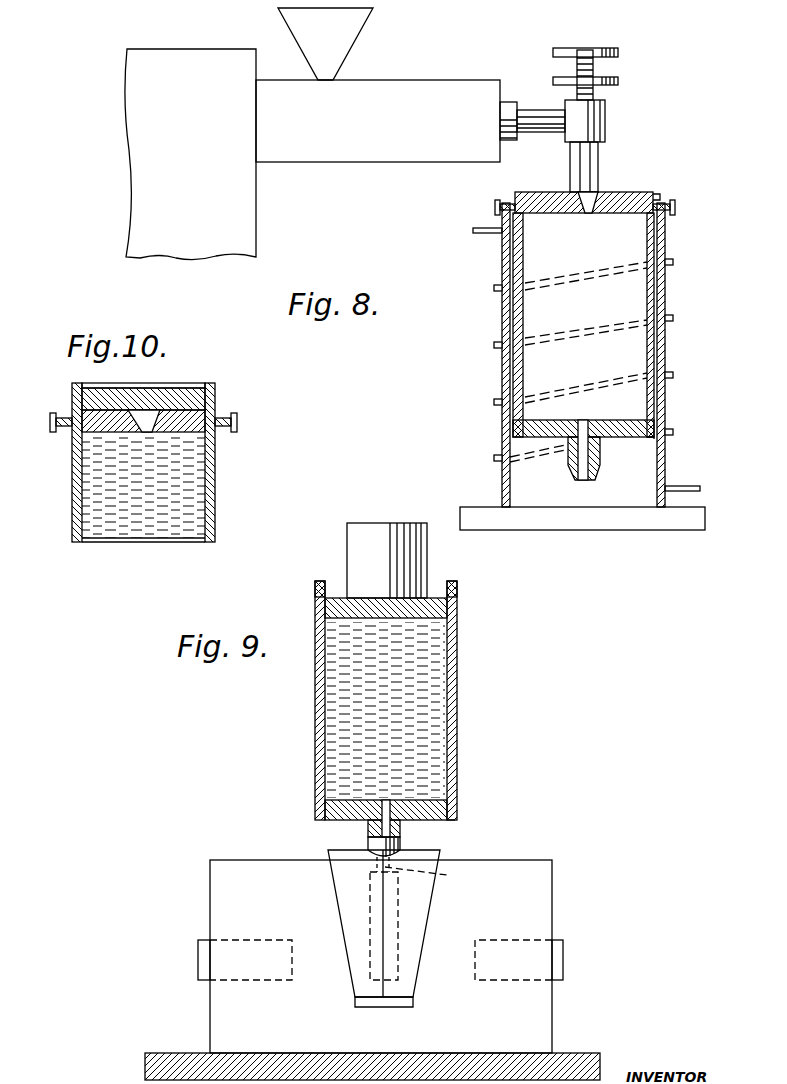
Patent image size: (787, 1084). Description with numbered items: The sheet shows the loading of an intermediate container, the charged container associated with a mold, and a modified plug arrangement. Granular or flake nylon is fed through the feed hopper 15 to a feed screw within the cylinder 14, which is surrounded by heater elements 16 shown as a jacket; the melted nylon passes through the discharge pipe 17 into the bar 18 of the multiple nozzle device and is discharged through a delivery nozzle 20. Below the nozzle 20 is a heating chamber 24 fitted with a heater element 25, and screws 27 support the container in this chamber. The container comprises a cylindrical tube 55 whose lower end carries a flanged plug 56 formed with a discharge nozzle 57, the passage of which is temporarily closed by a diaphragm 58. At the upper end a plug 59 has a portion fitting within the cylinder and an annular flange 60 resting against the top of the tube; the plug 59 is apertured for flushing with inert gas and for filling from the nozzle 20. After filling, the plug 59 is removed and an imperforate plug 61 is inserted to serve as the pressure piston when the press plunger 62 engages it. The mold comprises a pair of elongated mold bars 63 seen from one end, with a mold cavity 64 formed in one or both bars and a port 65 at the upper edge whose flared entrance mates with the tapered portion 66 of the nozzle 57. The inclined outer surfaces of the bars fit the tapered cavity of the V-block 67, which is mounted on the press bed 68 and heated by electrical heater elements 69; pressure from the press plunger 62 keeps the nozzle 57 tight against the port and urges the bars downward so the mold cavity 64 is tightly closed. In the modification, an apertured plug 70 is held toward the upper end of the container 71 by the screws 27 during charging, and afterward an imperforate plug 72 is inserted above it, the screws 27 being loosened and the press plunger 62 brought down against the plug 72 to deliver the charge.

In FIG. 8, the cylinder 14 is at (504, 101).
In FIG. 8, the feed hopper 15 is at (290, 28).
In FIG. 8, the heater elements 16 is at (349, 163).
In FIG. 8, the discharge pipe 17 is at (528, 112).
In FIG. 8, the bar 18 is at (606, 120).
In FIG. 8, the delivery nozzle 20 is at (600, 165).
In FIG. 8, the heating chamber 24 is at (503, 376).
In FIG. 8, the heater element 25 is at (673, 318).
In FIG. 8, the screws 27 is at (505, 200).
In FIG. 10, the screws 27 is at (53, 413).
In FIG. 8, the cylindrical tube 55 is at (655, 347).
In FIG. 9, the cylindrical tube 55 is at (458, 700).
In FIG. 8, the flanged plug 56 is at (623, 438).
In FIG. 9, the flanged plug 56 is at (427, 821).
In FIG. 8, the discharge nozzle 57 is at (598, 464).
In FIG. 9, the discharge nozzle 57 is at (370, 830).
In FIG. 8, the diaphragm 58 is at (613, 421).
In FIG. 9, the diaphragm 58 is at (423, 801).
In FIG. 8, the plug 59 is at (635, 192).
In FIG. 8, the annular flange 60 is at (658, 196).
In FIG. 9, the imperforate plug 61 is at (333, 600).
In FIG. 9, the press plunger 62 is at (350, 538).
In FIG. 9, the mold bars 63 is at (340, 858).
In FIG. 9, the mold cavity 64 is at (377, 903).
In FIG. 9, the port 65 is at (448, 876).
In FIG. 8, the tapered portion 66 is at (572, 473).
In FIG. 9, the V-block 67 is at (552, 912).
In FIG. 9, the press bed 68 is at (160, 1053).
In FIG. 9, the electrical heater elements 69 is at (200, 952).
In FIG. 10, the apertured plug 70 is at (103, 424).
In FIG. 10, the container 71 is at (72, 517).
In FIG. 10, the imperforate plug 72 is at (183, 390).